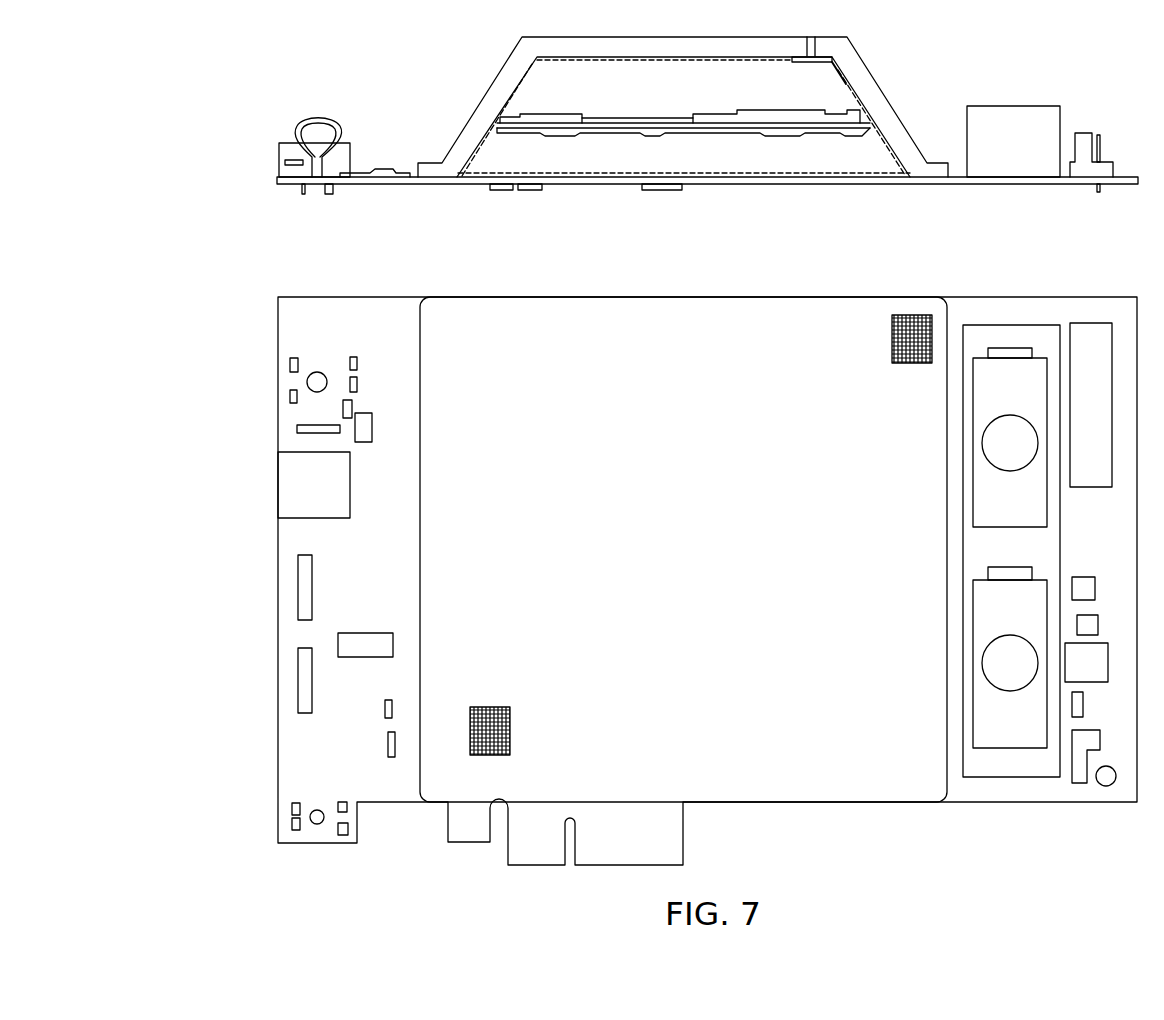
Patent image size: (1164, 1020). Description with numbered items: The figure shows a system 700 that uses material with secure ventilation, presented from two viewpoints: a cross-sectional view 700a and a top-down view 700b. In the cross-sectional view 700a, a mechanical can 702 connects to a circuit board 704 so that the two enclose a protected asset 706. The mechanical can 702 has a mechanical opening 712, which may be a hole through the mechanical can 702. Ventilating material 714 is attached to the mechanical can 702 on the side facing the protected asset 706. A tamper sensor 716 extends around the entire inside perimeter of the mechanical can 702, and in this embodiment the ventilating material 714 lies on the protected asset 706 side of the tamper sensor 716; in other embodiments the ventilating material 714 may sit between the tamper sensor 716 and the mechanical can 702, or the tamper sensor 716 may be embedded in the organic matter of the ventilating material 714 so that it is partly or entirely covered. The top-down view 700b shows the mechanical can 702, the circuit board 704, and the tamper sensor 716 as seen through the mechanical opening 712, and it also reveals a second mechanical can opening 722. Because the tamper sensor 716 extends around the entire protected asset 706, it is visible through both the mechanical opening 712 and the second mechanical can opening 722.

The system 700 is at (165, 45).
The cross-sectional view 700a is at (432, 88).
The top-down view 700b is at (244, 527).
The mechanical can 702 is at (583, 35).
The circuit board 704 is at (744, 185).
The protected asset 706 is at (618, 140).
The mechanical opening 712 is at (812, 37).
The ventilating material 714 is at (834, 64).
The tamper sensor 716 is at (650, 58).
The second mechanical can opening 722 is at (510, 730).